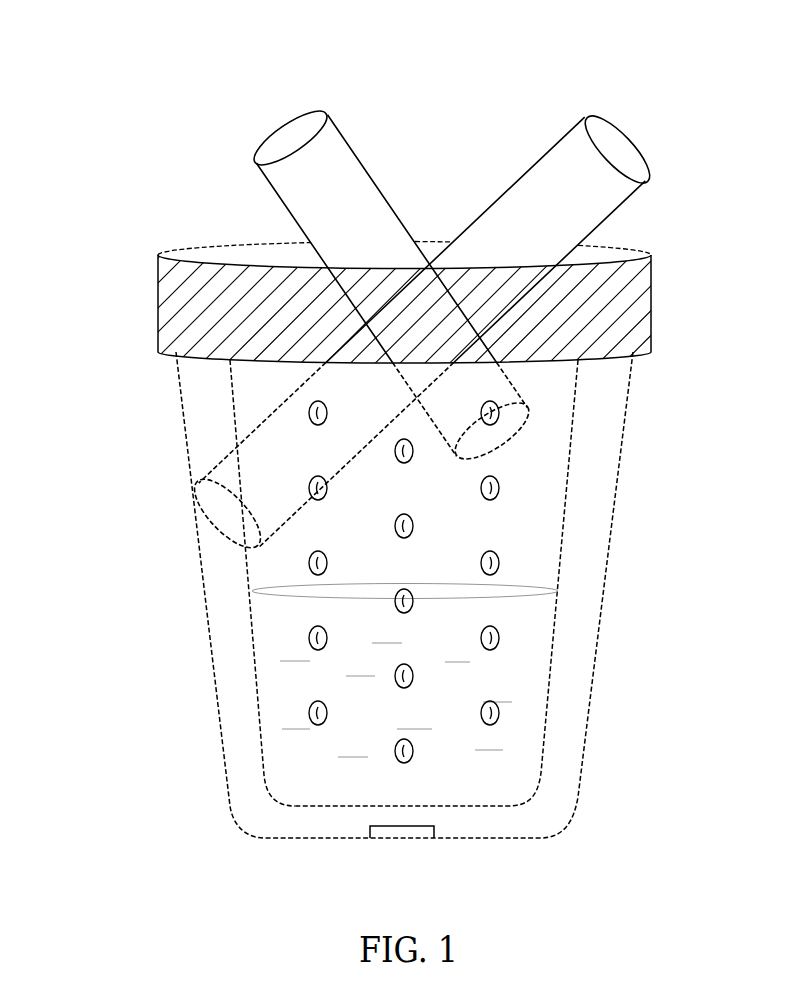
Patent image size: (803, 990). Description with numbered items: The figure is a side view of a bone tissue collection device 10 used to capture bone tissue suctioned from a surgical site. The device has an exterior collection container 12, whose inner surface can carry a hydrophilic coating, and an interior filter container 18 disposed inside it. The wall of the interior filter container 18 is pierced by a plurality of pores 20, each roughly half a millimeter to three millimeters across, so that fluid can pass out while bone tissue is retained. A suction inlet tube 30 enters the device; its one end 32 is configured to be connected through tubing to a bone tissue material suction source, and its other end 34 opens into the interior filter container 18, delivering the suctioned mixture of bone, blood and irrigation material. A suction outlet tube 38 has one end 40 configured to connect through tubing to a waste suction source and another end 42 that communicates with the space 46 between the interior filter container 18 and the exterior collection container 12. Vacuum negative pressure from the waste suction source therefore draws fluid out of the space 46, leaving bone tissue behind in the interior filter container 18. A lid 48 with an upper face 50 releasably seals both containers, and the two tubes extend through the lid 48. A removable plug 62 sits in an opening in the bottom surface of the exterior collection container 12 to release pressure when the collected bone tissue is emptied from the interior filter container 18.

The bone tissue collection device 10 is at (88, 58).
The exterior collection container 12 is at (197, 542).
The interior filter container 18 is at (565, 547).
The pores 20 is at (308, 566).
The suction inlet tube 30 is at (384, 198).
The one end of suction inlet tube 32 is at (263, 150).
The another end of suction inlet tube 34 is at (523, 428).
The suction outlet tube 38 is at (553, 150).
The one end of suction outlet tube 40 is at (615, 148).
The another end of suction outlet tube 42 is at (210, 473).
The space 46 is at (210, 422).
The lid 48 is at (653, 304).
The upper face 50 is at (228, 264).
The removable plug 62 is at (414, 838).